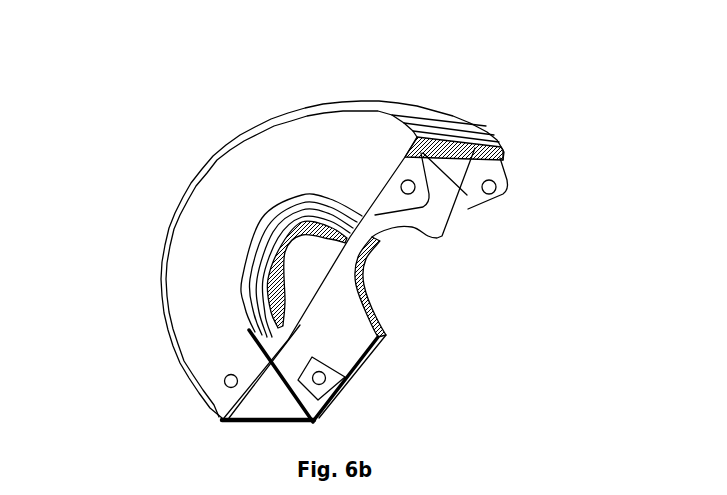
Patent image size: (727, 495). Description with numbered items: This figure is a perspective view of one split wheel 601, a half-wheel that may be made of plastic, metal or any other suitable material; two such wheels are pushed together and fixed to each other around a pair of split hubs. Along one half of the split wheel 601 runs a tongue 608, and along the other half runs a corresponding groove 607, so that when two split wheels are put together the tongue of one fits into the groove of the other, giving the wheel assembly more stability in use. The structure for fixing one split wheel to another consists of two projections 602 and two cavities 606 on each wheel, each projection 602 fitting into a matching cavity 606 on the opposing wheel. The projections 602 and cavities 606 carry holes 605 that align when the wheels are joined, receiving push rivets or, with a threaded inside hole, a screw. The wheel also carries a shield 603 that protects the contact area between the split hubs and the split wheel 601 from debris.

The split wheel 601 is at (158, 189).
The projection 602 is at (520, 190).
The shield 603 is at (460, 237).
The hole 605 is at (346, 378).
The cavity 606 is at (332, 400).
The groove 607 is at (497, 143).
The tongue 608 is at (222, 418).